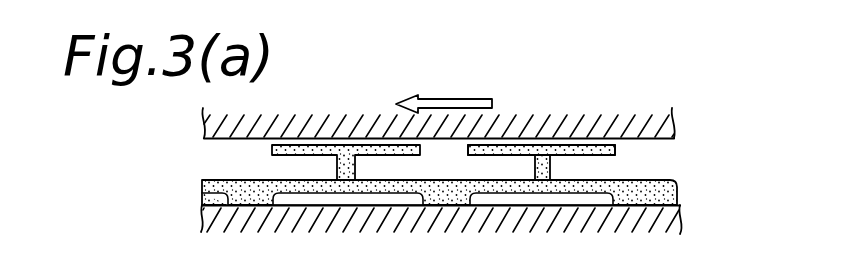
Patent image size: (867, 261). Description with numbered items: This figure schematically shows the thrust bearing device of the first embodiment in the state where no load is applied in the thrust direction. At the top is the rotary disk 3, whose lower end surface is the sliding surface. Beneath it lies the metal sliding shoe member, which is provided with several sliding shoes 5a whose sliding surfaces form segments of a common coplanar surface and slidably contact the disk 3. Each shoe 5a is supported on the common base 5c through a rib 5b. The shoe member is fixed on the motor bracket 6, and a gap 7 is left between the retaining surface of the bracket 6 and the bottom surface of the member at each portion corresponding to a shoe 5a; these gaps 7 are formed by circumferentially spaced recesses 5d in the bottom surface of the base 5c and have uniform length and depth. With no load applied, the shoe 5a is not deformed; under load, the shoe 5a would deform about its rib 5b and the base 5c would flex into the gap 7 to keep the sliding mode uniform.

The rotary disk 3 is at (641, 118).
The sliding shoe 5a is at (615, 156).
The rib 5b is at (544, 156).
The common base 5c is at (600, 187).
The recess 5d is at (518, 190).
The motor bracket 6 is at (427, 258).
The gap 7 is at (344, 202).